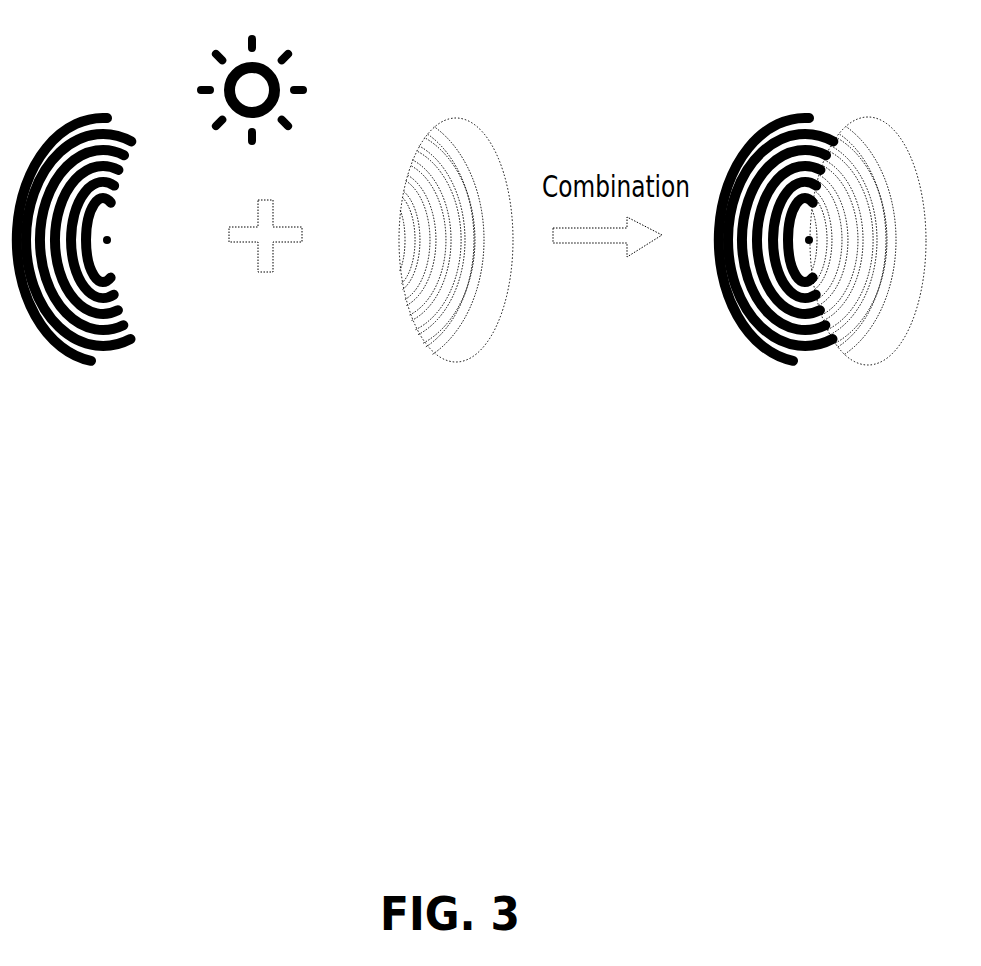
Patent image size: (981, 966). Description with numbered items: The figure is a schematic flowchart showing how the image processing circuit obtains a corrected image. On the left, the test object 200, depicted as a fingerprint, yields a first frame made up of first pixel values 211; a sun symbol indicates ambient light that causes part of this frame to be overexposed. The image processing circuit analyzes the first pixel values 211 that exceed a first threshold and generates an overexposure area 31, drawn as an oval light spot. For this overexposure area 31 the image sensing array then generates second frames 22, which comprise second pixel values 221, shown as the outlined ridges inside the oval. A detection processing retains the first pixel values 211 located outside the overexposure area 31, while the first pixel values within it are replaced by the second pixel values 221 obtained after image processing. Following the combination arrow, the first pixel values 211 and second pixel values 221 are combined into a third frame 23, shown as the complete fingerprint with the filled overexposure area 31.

The test object 200 is at (107, 192).
The first pixel values 211 is at (110, 283).
The second frames 22 is at (426, 197).
The second pixel values 221 is at (366, 263).
The overexposure area 31 is at (503, 168).
The third frame 23 is at (772, 120).